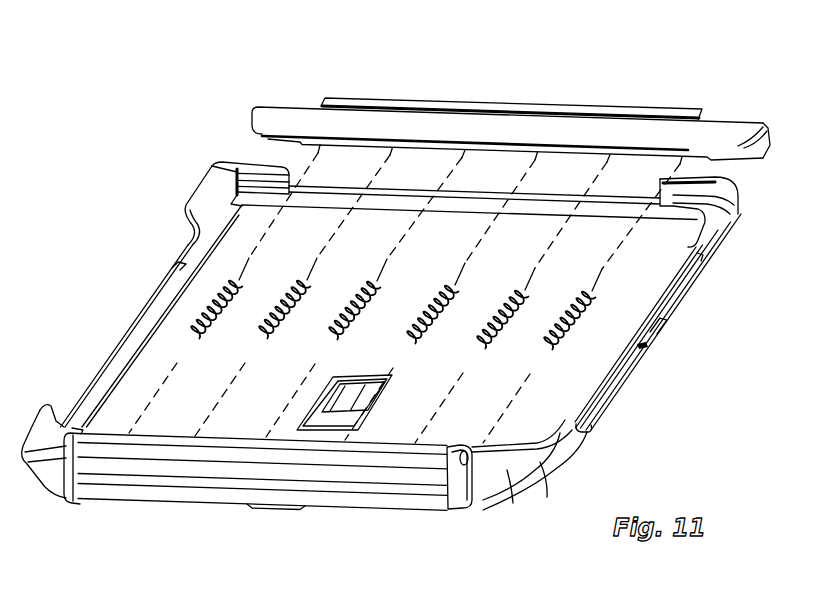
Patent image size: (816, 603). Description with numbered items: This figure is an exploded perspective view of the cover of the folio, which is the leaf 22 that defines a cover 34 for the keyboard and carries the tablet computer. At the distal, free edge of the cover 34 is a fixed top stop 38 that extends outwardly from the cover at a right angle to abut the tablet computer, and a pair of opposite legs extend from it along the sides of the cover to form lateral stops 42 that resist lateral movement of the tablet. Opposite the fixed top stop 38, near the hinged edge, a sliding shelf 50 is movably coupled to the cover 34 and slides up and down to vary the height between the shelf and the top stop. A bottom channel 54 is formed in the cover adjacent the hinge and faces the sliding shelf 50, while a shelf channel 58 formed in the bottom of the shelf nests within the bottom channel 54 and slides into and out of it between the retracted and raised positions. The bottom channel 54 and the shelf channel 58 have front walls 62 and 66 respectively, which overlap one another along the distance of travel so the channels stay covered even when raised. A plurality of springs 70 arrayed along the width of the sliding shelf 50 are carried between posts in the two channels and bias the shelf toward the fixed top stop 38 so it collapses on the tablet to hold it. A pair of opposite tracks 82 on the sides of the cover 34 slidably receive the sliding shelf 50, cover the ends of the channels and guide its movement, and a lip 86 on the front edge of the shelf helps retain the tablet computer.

The leaf 22 is at (692, 283).
The cover 34 is at (613, 398).
The fixed top stop 38 is at (246, 160).
The lateral stops 42 is at (197, 192).
The sliding shelf 50 is at (432, 104).
The bottom channel 54 is at (558, 440).
The shelf channel 58 is at (735, 146).
The front wall 62 is at (490, 453).
The front wall 66 is at (362, 124).
The springs 70 is at (578, 318).
The tracks 82 is at (40, 410).
The lip 86 is at (538, 104).